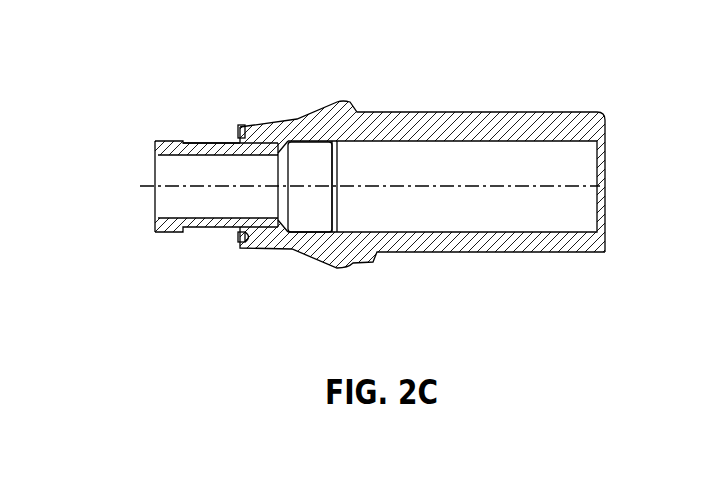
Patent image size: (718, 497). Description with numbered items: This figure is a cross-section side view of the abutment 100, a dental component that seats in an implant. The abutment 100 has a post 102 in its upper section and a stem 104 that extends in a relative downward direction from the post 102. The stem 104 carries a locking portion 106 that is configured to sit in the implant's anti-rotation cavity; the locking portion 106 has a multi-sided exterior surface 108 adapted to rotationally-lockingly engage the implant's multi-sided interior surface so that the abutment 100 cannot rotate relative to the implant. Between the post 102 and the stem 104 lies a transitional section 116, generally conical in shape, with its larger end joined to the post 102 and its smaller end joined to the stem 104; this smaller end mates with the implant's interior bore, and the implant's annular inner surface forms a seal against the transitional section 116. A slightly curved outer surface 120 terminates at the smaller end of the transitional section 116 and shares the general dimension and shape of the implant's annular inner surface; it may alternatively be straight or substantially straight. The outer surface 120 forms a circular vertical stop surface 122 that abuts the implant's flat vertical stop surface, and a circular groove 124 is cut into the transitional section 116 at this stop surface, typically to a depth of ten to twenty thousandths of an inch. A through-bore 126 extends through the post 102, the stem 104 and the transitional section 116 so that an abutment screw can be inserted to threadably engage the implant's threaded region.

The abutment 100 is at (465, 93).
The post 102 is at (155, 185).
The stem 104 is at (592, 172).
The locking portion 106 is at (185, 142).
The multi-sided exterior surface 108 is at (177, 140).
The transitional section 116 is at (305, 254).
The outer surface 120 is at (245, 241).
The circular vertical stop surface 122 is at (233, 232).
The circular groove 124 is at (243, 126).
The through-bore 126 is at (397, 187).